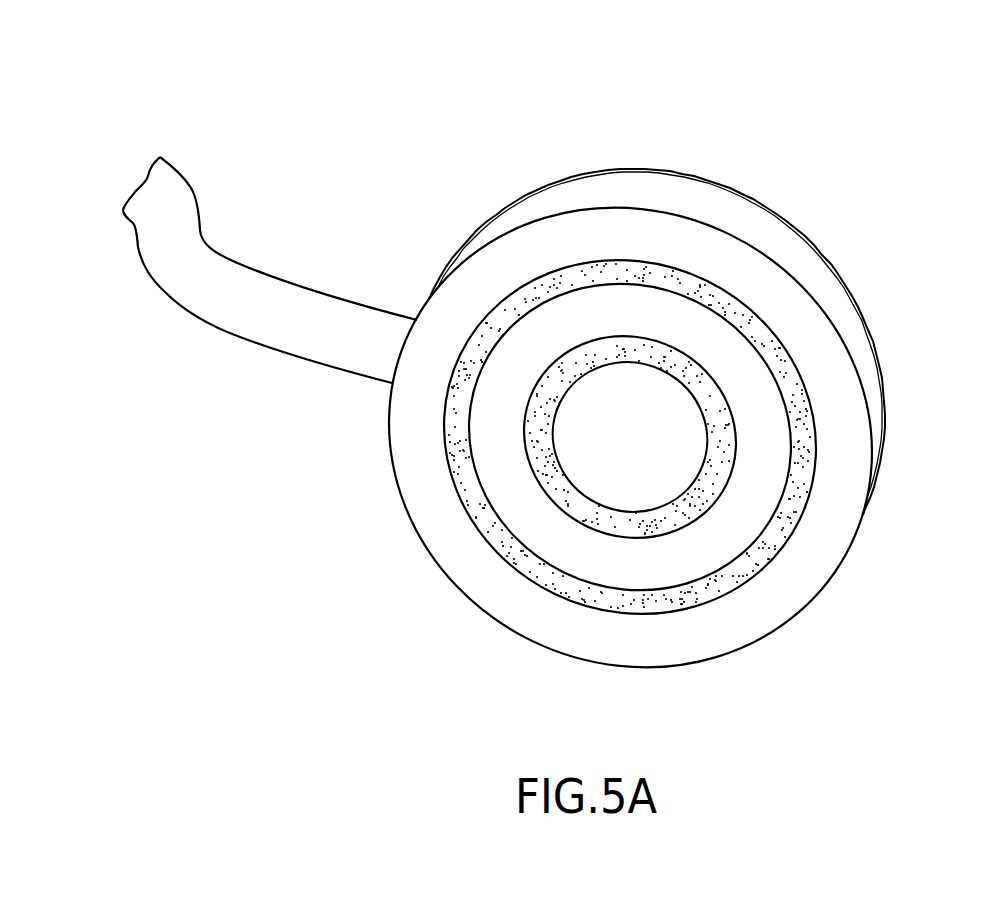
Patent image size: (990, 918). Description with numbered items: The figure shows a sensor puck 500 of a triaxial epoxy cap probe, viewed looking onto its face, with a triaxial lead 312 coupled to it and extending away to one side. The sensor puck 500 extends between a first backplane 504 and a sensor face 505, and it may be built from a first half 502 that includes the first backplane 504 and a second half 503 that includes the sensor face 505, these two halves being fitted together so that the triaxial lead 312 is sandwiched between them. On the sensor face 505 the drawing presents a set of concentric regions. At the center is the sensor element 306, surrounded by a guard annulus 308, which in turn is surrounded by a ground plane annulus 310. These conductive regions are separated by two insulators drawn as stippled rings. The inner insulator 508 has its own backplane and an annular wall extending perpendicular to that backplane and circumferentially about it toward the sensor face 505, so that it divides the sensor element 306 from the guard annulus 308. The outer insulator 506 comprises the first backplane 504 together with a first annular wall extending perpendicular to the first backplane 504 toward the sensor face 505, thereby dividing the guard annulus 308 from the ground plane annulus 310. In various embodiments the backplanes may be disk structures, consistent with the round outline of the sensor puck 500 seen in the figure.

The sensor puck 500 is at (815, 128).
The first half 502 is at (889, 275).
The second half 503 is at (868, 603).
The first backplane 504 is at (833, 268).
The sensor face 505 is at (408, 631).
The outer insulator 506 is at (790, 518).
The inner insulator 508 is at (728, 430).
The sensor element 306 is at (639, 448).
The guard annulus 308 is at (583, 334).
The ground plane annulus 310 is at (518, 276).
The triaxial lead 312 is at (272, 229).